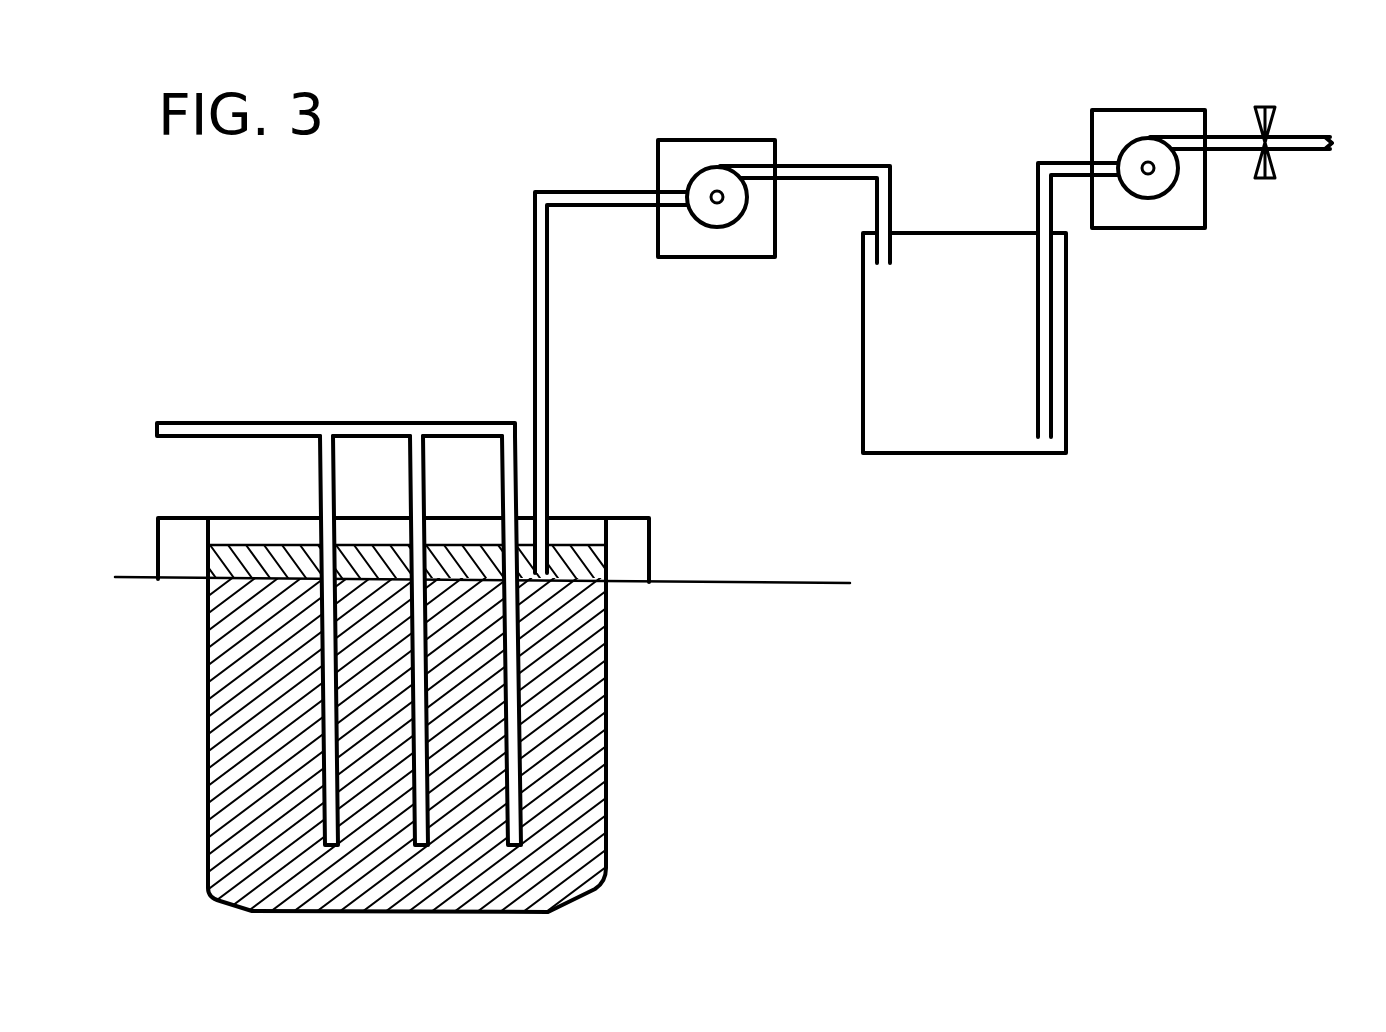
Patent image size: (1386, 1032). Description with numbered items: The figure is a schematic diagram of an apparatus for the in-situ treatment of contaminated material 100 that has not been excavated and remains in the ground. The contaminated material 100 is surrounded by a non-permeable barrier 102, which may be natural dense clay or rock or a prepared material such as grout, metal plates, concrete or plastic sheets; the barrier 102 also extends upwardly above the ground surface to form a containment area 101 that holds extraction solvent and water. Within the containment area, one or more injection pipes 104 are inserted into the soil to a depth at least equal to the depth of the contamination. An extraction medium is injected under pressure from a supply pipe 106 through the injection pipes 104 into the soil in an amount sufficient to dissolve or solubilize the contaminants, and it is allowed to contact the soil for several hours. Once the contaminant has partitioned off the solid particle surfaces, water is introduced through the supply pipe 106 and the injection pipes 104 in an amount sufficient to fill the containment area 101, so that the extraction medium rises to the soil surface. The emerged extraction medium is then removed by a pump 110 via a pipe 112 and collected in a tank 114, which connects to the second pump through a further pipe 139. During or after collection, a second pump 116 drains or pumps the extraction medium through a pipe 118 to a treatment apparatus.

The contaminated material 100 is at (233, 703).
The containment area 101 is at (248, 536).
The non-permeable barrier 102 is at (607, 691).
The injection pipes 104 is at (522, 765).
The supply pipe 106 is at (264, 422).
The pump 110 is at (697, 140).
The pipe 112 is at (535, 268).
The tank 114 is at (958, 454).
The pump 116 is at (1130, 110).
The pipe 118 is at (1303, 137).
The connecting pipe 139 is at (857, 165).